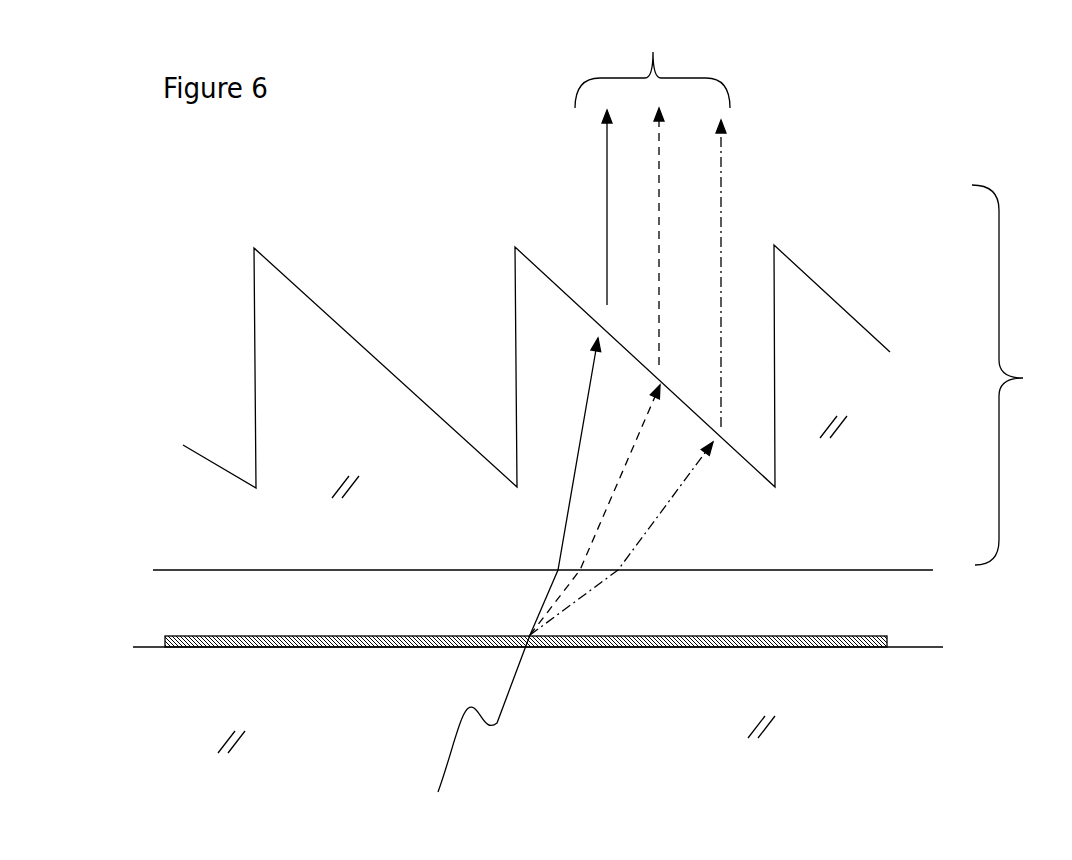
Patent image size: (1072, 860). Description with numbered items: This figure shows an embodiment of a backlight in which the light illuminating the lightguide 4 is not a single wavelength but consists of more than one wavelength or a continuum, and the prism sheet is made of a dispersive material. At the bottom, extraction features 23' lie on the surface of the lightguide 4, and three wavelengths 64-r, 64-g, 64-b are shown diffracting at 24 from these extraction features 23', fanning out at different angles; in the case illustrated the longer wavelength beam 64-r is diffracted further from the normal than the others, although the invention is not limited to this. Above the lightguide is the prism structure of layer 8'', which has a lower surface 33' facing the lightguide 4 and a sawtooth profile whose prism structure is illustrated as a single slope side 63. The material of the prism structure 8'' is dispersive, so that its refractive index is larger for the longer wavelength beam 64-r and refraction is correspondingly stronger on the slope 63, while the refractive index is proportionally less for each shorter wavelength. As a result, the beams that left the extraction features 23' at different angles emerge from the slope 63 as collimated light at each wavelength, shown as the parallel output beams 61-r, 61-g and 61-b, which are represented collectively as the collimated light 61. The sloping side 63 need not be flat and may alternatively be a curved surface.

The lightguide 4 is at (590, 718).
The prism structure layer 8'' is at (1018, 375).
The extraction features 23' is at (544, 680).
The diffraction point 24 is at (475, 732).
The lower surface 33' is at (519, 629).
The collimated light 61 is at (652, 65).
The collimated blue wavelength light 61-b is at (603, 195).
The collimated green wavelength light 61-g is at (653, 253).
The collimated red wavelength light 61-r is at (721, 187).
The single slope side 63 is at (822, 288).
The blue wavelength beam 64-b is at (567, 522).
The green wavelength beam 64-g is at (590, 545).
The longer wavelength beam 64-r is at (638, 533).